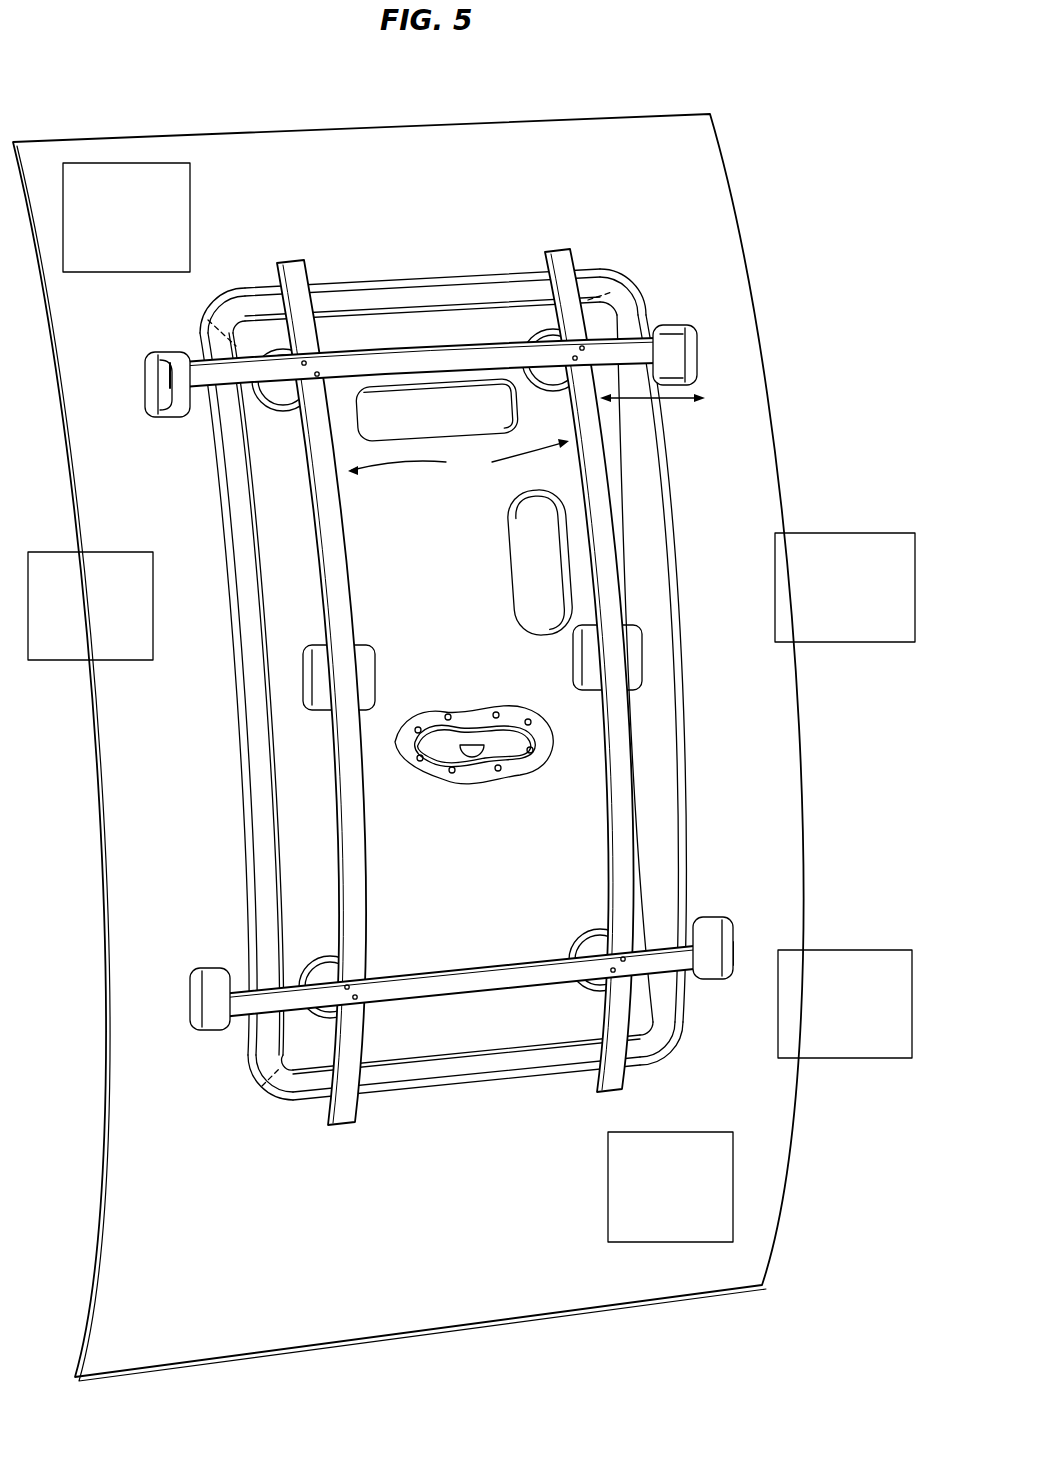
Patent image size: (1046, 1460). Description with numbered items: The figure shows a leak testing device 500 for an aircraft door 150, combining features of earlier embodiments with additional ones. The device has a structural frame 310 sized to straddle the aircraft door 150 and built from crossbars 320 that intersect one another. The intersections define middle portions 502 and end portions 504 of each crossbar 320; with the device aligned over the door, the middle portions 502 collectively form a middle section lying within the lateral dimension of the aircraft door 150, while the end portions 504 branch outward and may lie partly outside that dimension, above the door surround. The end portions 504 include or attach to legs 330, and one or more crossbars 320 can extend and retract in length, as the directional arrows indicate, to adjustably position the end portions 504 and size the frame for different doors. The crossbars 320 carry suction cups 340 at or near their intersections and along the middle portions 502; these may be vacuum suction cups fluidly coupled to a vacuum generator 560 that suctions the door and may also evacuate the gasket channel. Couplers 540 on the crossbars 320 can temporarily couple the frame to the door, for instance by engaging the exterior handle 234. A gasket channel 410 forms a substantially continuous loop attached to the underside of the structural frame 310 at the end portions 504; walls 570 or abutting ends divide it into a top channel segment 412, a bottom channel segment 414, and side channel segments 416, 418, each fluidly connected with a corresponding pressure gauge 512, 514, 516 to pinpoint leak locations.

The leak testing device 500 is at (794, 146).
The aircraft door 150 is at (304, 818).
The exterior handle 234 is at (471, 726).
The structural frame 310 is at (364, 1108).
The crossbars 320 is at (298, 272).
The legs 330 is at (160, 355).
The suction cups 340 is at (546, 345).
The gasket channel 410 is at (436, 691).
The top channel segment 412 is at (446, 290).
The bottom channel segment 414 is at (468, 1047).
The side channel segment 416 is at (253, 698).
The side channel segment 418 is at (668, 732).
The middle portions 502 is at (526, 434).
The end portions 504 is at (589, 288).
The pressure gauge 512 is at (262, 302).
The pressure gauge 514 is at (665, 1001).
The pressure gauge 516 is at (250, 613).
The couplers 540 is at (368, 648).
The vacuum generator 560 is at (612, 607).
The walls 570 is at (200, 318).